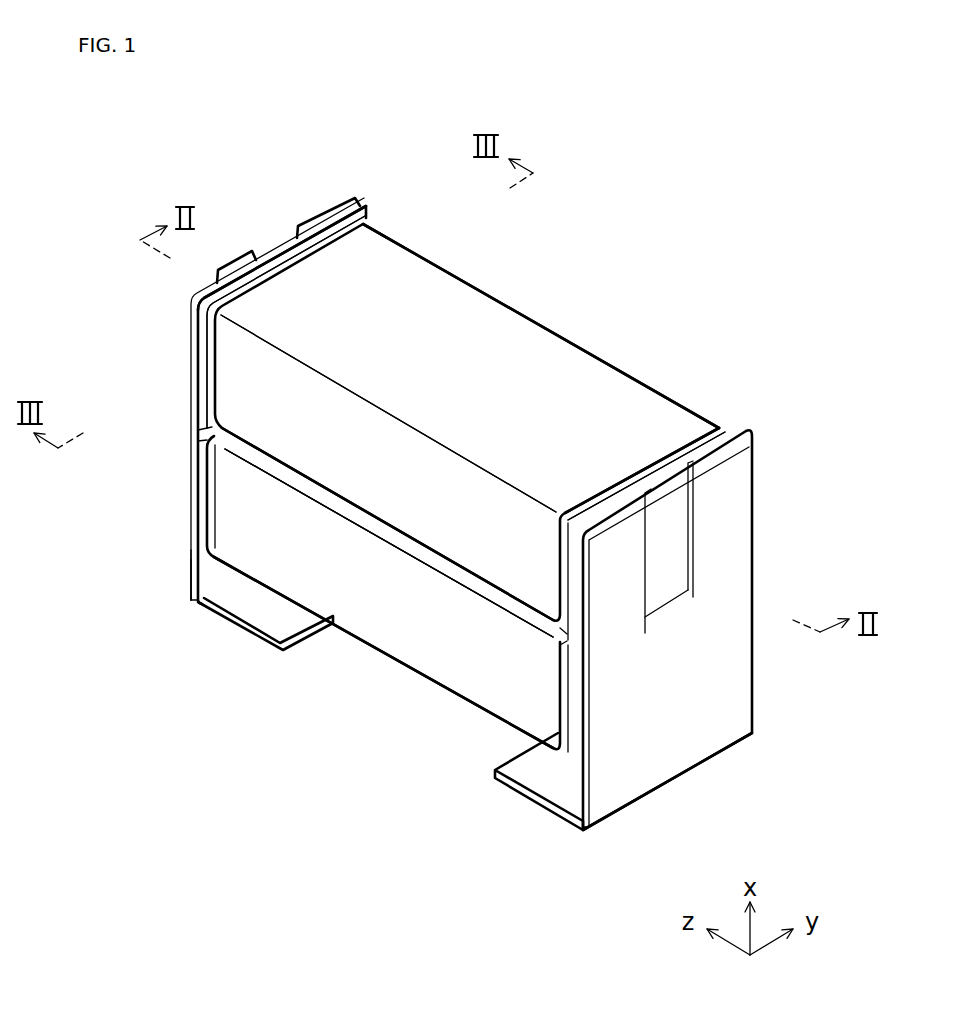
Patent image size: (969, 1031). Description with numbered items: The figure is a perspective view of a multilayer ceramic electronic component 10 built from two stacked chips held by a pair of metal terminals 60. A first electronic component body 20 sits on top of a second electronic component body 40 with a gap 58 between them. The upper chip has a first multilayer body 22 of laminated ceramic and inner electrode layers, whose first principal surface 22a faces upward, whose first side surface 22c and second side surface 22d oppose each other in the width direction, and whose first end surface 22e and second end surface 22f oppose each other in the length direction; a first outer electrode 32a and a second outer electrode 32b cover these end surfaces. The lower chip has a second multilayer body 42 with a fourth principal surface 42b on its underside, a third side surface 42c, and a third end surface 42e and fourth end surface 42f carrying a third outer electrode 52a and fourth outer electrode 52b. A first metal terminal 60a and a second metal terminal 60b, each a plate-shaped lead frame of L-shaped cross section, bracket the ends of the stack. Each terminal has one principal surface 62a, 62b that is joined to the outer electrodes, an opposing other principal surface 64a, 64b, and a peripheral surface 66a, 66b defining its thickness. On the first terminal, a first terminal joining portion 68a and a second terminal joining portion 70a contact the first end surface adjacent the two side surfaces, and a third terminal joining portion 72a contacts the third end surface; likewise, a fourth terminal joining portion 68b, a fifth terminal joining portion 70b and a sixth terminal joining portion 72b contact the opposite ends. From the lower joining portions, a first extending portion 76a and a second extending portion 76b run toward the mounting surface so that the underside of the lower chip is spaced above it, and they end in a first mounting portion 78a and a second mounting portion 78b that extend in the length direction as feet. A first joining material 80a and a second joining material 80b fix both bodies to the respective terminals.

The multilayer ceramic electronic component 10 is at (146, 167).
The first electronic component body 20 is at (446, 262).
The first multilayer body 22 is at (600, 386).
The first principal surface 22a is at (481, 330).
The first side surface 22c is at (238, 352).
The second side surface 22d is at (530, 360).
The first end surface 22e is at (298, 293).
The second end surface 22f is at (668, 505).
The first outer electrode 32a is at (290, 260).
The second outer electrode 32b is at (688, 441).
The second electronic component body 40 is at (466, 706).
The second multilayer body 42 is at (357, 627).
The fourth principal surface 42b is at (455, 680).
The third side surface 42c is at (448, 660).
The third end surface 42e is at (220, 498).
The fourth end surface 42f is at (650, 705).
The third outer electrode 52a is at (207, 480).
The fourth outer electrode 52b is at (557, 708).
The gap 58 is at (398, 538).
The metal terminals 60 is at (238, 956).
The first metal terminal 60a is at (189, 375).
The second metal terminal 60b is at (755, 594).
The one principal surface 62a is at (215, 565).
The one principal surface 62b is at (580, 785).
The other principal surface 64a is at (205, 572).
The other principal surface 64b is at (672, 767).
The peripheral surface 66a is at (195, 600).
The peripheral surface 66b is at (555, 790).
The first terminal joining portion 68a is at (220, 297).
The fourth terminal joining portion 68b is at (625, 548).
The second terminal joining portion 70a is at (330, 228).
The fifth terminal joining portion 70b is at (725, 550).
The third terminal joining portion 72a is at (202, 462).
The sixth terminal joining portion 72b is at (700, 673).
The first extending portion 76a is at (192, 562).
The second extending portion 76b is at (732, 720).
The first mounting portion 78a is at (265, 612).
The second mounting portion 78b is at (556, 787).
The first joining material 80a is at (363, 218).
The second joining material 80b is at (720, 436).